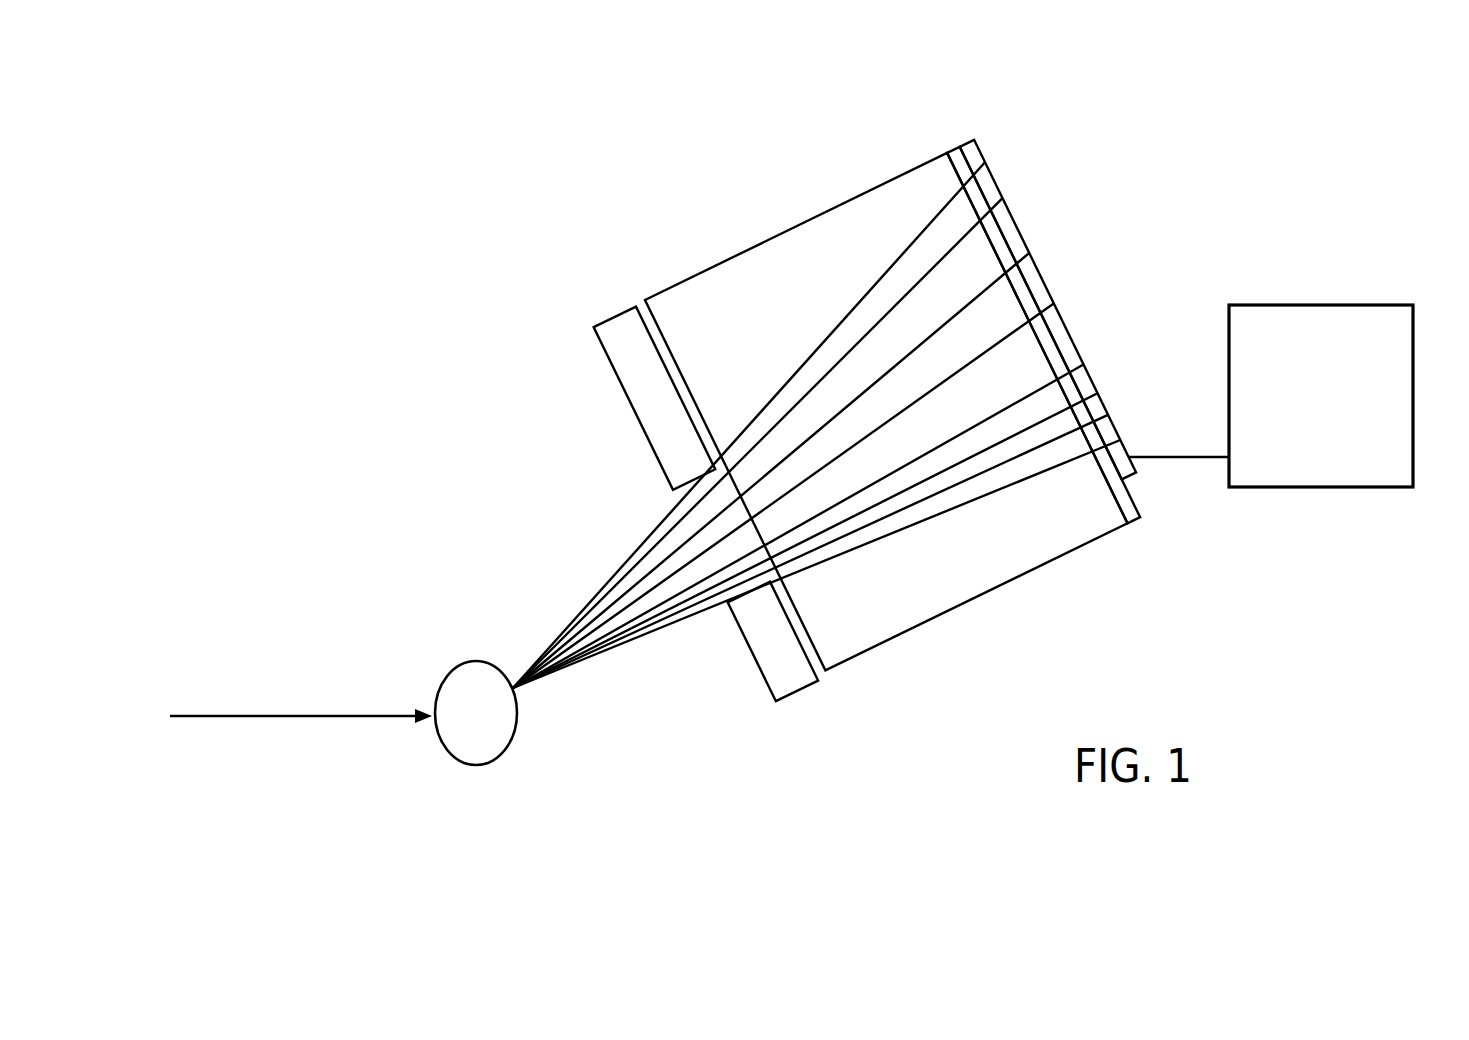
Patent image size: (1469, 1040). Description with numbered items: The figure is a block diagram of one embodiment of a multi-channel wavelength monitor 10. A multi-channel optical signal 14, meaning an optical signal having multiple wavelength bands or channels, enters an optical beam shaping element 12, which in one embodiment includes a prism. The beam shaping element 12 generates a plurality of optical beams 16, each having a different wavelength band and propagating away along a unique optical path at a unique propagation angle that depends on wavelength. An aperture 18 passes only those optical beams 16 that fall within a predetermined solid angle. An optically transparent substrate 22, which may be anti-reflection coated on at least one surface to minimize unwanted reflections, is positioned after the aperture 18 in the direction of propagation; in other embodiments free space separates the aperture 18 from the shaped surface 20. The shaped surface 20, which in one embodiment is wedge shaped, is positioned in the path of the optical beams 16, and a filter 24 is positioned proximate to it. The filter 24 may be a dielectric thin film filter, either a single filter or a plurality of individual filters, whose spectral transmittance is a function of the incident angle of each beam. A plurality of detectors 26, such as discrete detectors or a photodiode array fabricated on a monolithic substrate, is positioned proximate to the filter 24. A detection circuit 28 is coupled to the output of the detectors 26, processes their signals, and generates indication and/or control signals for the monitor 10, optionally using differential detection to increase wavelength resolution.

The multi-channel wavelength monitor 10 is at (887, 77).
The optical beam shaping element 12 is at (476, 765).
The multi-channel optical signal 14 is at (298, 717).
The optical beams 16 is at (666, 617).
The aperture 18 is at (638, 422).
The shaped surface 20 is at (1069, 376).
The optically transparent substrate 22 is at (880, 236).
The filter 24 is at (1140, 505).
The plurality of detectors 26 is at (1060, 310).
The detection circuit 28 is at (1415, 383).